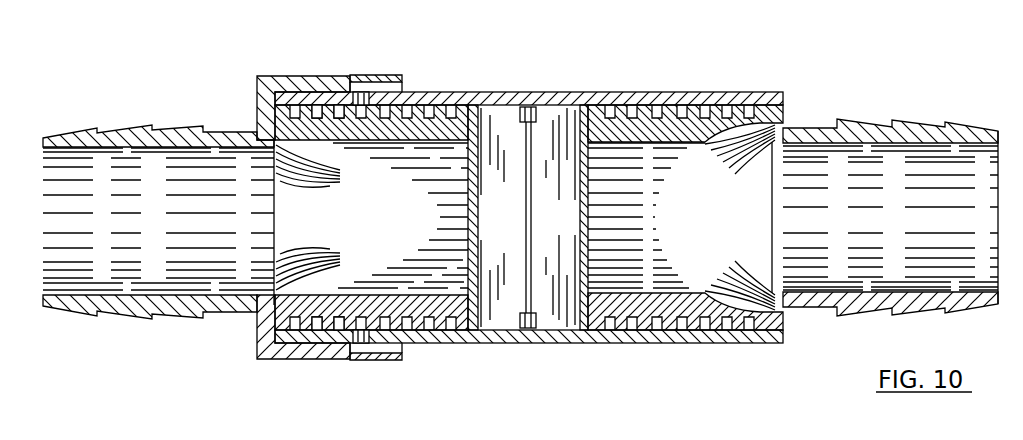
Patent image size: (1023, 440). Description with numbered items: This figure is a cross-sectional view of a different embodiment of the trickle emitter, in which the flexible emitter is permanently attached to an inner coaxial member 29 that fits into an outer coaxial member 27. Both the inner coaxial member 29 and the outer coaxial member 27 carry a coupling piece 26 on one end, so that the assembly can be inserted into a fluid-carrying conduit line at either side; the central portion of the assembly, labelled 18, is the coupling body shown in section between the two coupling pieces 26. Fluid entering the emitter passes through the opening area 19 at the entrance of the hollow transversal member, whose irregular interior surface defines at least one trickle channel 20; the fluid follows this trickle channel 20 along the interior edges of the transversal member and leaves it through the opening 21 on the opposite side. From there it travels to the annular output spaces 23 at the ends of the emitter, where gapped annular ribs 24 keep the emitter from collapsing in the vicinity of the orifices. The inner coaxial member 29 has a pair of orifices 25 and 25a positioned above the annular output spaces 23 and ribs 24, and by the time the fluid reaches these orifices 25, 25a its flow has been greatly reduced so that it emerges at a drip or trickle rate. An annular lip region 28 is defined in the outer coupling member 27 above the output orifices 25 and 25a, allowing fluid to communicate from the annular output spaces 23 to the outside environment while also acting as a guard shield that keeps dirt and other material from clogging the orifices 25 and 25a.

The coupling body 18 is at (588, 212).
The opening area 19 is at (528, 107).
The trickle channel 20 is at (533, 172).
The opening 21 is at (527, 330).
The annular output region 23 is at (402, 108).
The annular rib 24 is at (328, 107).
The output orifice 25 is at (357, 92).
The output orifice 25a is at (362, 343).
The coupling piece 26 is at (196, 128).
The outer coaxial member 27 is at (285, 80).
The annular lip region 28 is at (382, 76).
The inner coaxial member 29 is at (707, 93).